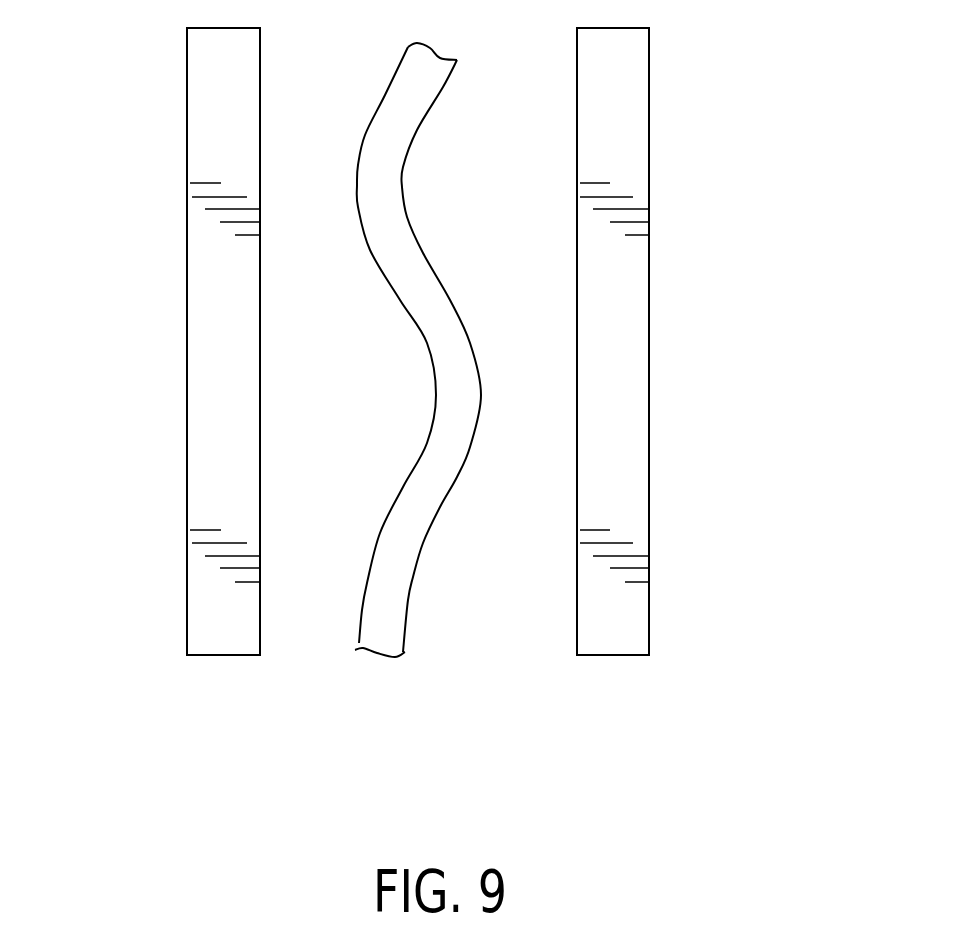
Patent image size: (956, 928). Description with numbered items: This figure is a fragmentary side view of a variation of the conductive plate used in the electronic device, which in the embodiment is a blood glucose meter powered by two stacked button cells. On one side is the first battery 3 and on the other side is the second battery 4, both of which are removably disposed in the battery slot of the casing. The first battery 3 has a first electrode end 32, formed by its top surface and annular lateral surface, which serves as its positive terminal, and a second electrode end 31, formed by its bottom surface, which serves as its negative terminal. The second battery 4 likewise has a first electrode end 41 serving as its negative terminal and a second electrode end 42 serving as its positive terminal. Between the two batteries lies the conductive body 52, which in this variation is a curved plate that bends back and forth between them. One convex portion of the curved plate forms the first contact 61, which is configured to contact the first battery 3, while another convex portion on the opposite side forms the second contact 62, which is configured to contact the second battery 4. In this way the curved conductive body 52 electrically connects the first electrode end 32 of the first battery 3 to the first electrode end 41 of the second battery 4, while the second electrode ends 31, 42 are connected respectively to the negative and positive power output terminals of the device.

The first battery 3 is at (218, 667).
The second electrode end of the first battery 31 is at (187, 340).
The first electrode end of the first battery 32 is at (260, 342).
The second battery 4 is at (622, 683).
The first electrode end of the second battery 41 is at (577, 463).
The second electrode end of the second battery 42 is at (650, 342).
The conductive body 52 is at (412, 392).
The first contact 61 is at (357, 182).
The second contact 62 is at (482, 395).